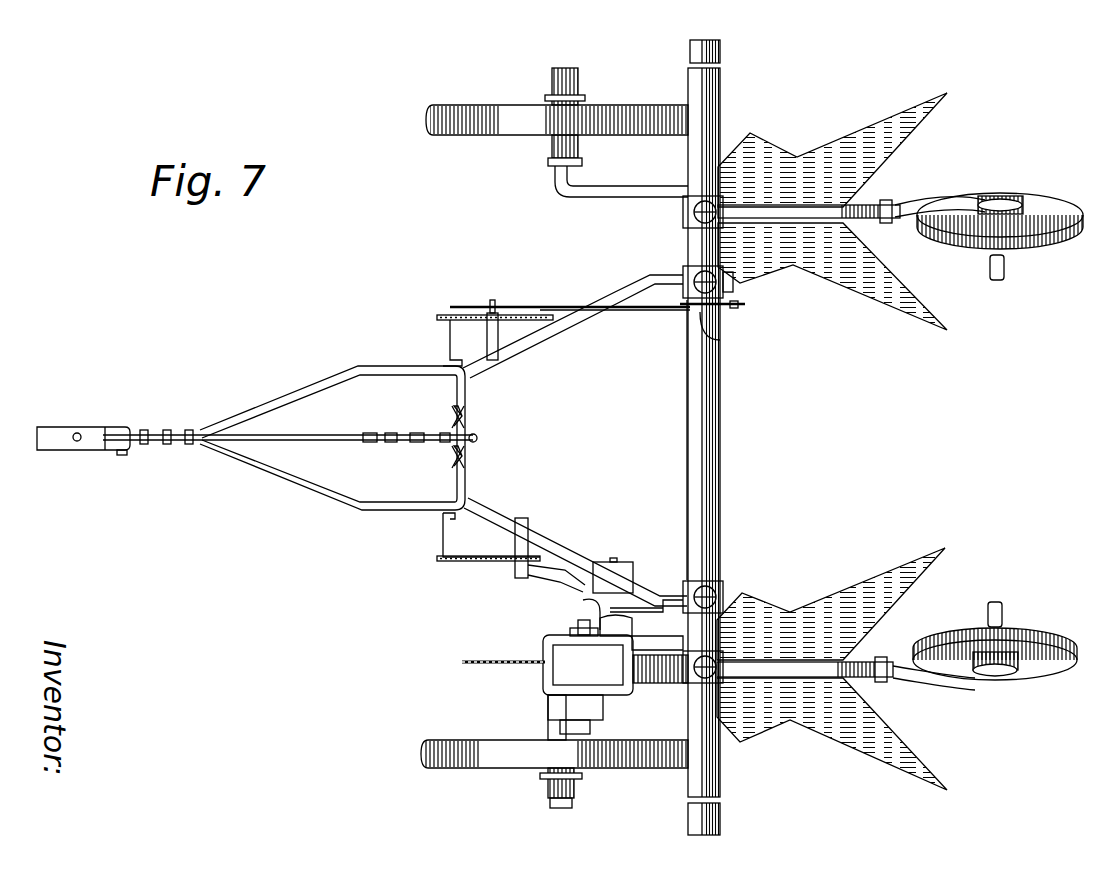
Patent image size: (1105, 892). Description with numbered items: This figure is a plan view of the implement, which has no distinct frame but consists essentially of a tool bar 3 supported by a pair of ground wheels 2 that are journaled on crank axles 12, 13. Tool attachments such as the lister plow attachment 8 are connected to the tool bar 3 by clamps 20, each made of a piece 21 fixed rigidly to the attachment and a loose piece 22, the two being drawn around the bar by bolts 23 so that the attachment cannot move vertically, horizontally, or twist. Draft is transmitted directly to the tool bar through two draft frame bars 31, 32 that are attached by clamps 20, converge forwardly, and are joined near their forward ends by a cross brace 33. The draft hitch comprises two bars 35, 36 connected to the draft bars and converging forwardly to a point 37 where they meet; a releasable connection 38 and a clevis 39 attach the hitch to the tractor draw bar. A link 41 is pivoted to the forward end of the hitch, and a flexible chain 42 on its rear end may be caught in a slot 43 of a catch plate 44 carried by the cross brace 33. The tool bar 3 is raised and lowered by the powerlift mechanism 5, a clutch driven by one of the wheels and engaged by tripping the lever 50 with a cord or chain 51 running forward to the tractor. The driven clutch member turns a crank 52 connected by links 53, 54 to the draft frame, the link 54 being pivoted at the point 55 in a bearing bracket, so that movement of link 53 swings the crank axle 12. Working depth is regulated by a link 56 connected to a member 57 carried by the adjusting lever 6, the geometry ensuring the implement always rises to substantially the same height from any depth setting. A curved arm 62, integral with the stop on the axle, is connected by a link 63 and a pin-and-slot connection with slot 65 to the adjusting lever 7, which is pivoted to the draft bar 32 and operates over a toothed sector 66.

The ground wheel 2 is at (598, 128).
The tool bar 3 is at (721, 80).
The powerlift mechanism 5 is at (560, 681).
The adjusting lever 6 is at (518, 562).
The adjusting lever 7 is at (500, 315).
The lister plow attachment 8 is at (873, 289).
The crank axle 12 is at (656, 645).
The crank axle 13 is at (610, 199).
The clamp 20 is at (722, 205).
The clamp piece 21 is at (722, 290).
The clamp piece 22 is at (687, 322).
The bolt 23 is at (721, 332).
The draft frame bar 31 is at (541, 553).
The draft frame bar 32 is at (570, 319).
The cross brace 33 is at (467, 393).
The hitch bar 35 is at (296, 480).
The hitch bar 36 is at (285, 394).
The convergence point 37 is at (195, 431).
The releasable connection 38 is at (155, 430).
The clevis 39 is at (81, 432).
The link 41 is at (315, 434).
The flexible chain 42 is at (395, 433).
The slot 43 is at (450, 442).
The catch plate 44 is at (466, 455).
The lever 50 is at (656, 676).
The cord or chain 51 is at (481, 665).
The crank 52 is at (590, 626).
The link 53 is at (625, 626).
The link 54 is at (640, 604).
The pivot 55 is at (616, 562).
The link 56 is at (562, 596).
The member 57 is at (540, 570).
The curved arm 62 is at (735, 308).
The link 63 is at (661, 312).
The slot 65 is at (461, 306).
The toothed sector 66 is at (445, 321).